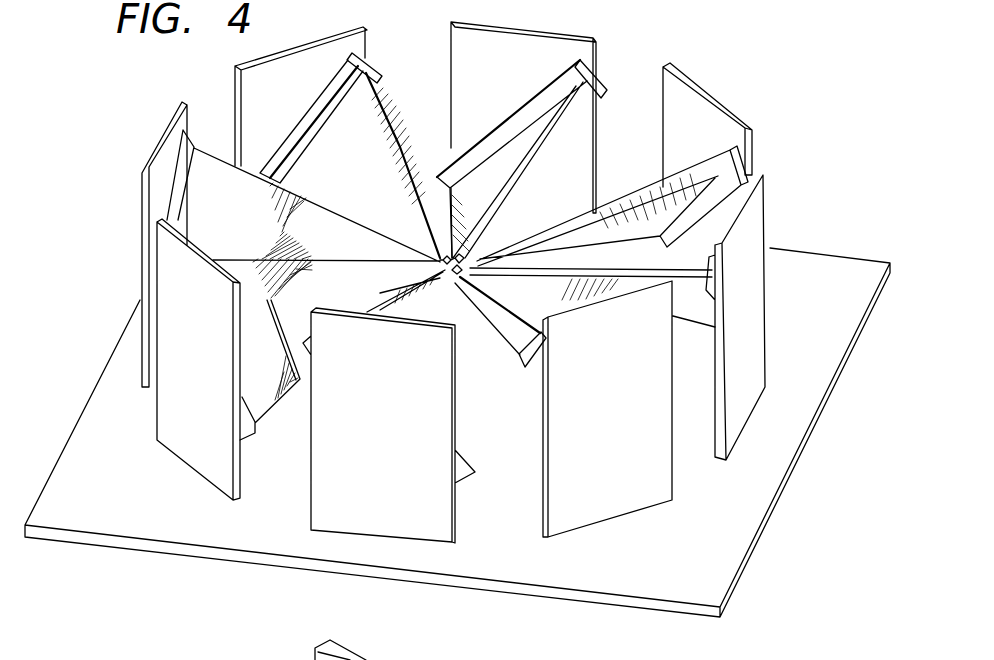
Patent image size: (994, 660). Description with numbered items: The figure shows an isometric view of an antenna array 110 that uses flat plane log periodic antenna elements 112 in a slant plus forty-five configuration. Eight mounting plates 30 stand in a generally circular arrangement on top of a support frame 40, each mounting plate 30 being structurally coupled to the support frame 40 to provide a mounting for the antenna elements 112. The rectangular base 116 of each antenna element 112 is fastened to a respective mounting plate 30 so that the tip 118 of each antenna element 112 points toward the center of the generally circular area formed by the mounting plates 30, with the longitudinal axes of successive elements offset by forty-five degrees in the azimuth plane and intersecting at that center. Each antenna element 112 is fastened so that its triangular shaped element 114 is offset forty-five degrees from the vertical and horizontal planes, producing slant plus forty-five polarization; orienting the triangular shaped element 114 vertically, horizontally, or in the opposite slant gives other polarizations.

The antenna array 110 is at (786, 72).
The antenna element 112 is at (247, 222).
The triangular shaped element 114 is at (350, 167).
The rectangular base 116 is at (603, 84).
The tip 118 is at (457, 283).
The mounting plate 30 is at (630, 467).
The support frame 40 is at (696, 574).